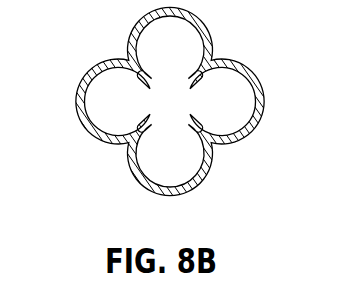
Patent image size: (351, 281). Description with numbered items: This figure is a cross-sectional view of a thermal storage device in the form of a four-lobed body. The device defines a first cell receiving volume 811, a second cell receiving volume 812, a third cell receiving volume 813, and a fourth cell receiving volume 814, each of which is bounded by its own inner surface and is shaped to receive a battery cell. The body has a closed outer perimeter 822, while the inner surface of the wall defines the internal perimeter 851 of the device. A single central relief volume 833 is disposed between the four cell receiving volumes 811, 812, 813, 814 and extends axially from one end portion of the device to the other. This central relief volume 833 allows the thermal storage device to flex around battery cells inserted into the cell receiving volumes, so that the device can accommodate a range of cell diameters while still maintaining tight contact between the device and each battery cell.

The first cell receiving volume 811 is at (120, 88).
The second cell receiving volume 812 is at (167, 33).
The third cell receiving volume 813 is at (233, 100).
The fourth cell receiving volume 814 is at (168, 162).
The closed outer perimeter 822 is at (213, 33).
The central relief volume 833 is at (173, 102).
The internal perimeter 851 is at (120, 128).